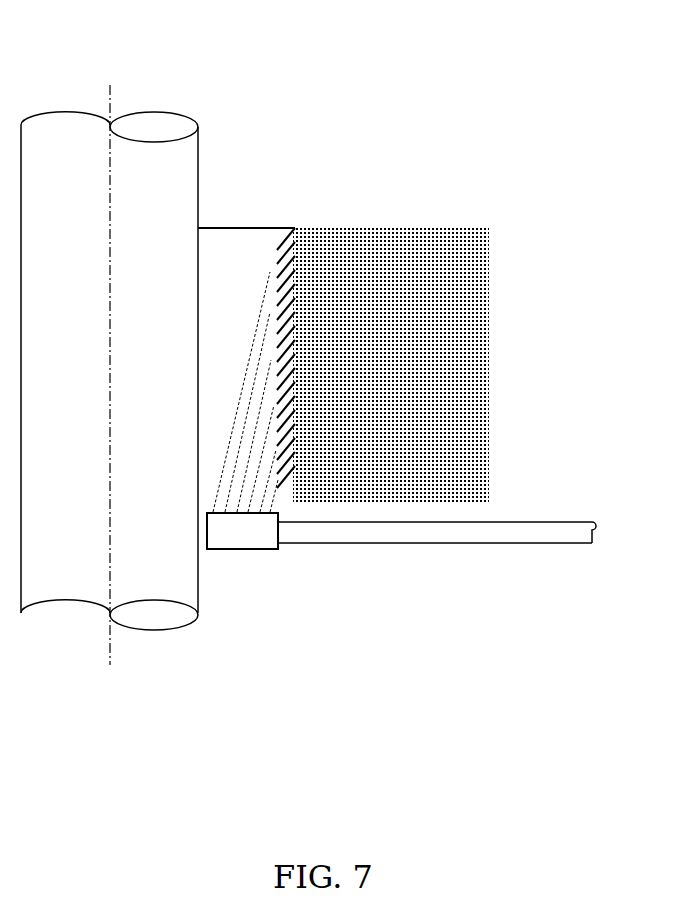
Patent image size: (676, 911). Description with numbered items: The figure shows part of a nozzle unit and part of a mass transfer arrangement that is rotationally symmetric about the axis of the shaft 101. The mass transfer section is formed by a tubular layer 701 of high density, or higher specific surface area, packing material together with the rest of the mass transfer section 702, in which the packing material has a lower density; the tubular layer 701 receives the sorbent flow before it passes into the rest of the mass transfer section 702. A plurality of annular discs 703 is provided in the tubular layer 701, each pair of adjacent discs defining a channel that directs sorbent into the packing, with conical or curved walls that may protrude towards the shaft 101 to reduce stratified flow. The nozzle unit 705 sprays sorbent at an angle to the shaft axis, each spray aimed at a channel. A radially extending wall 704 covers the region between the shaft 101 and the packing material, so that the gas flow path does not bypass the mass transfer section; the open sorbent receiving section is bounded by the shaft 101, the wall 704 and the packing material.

The shaft 101 is at (138, 167).
The tubular layer of high density packing material 701 is at (287, 237).
The rest of the mass transfer section 702 is at (372, 245).
The annular discs 703 is at (285, 462).
The radially extending wall 704 is at (209, 227).
The nozzle unit 705 is at (228, 533).